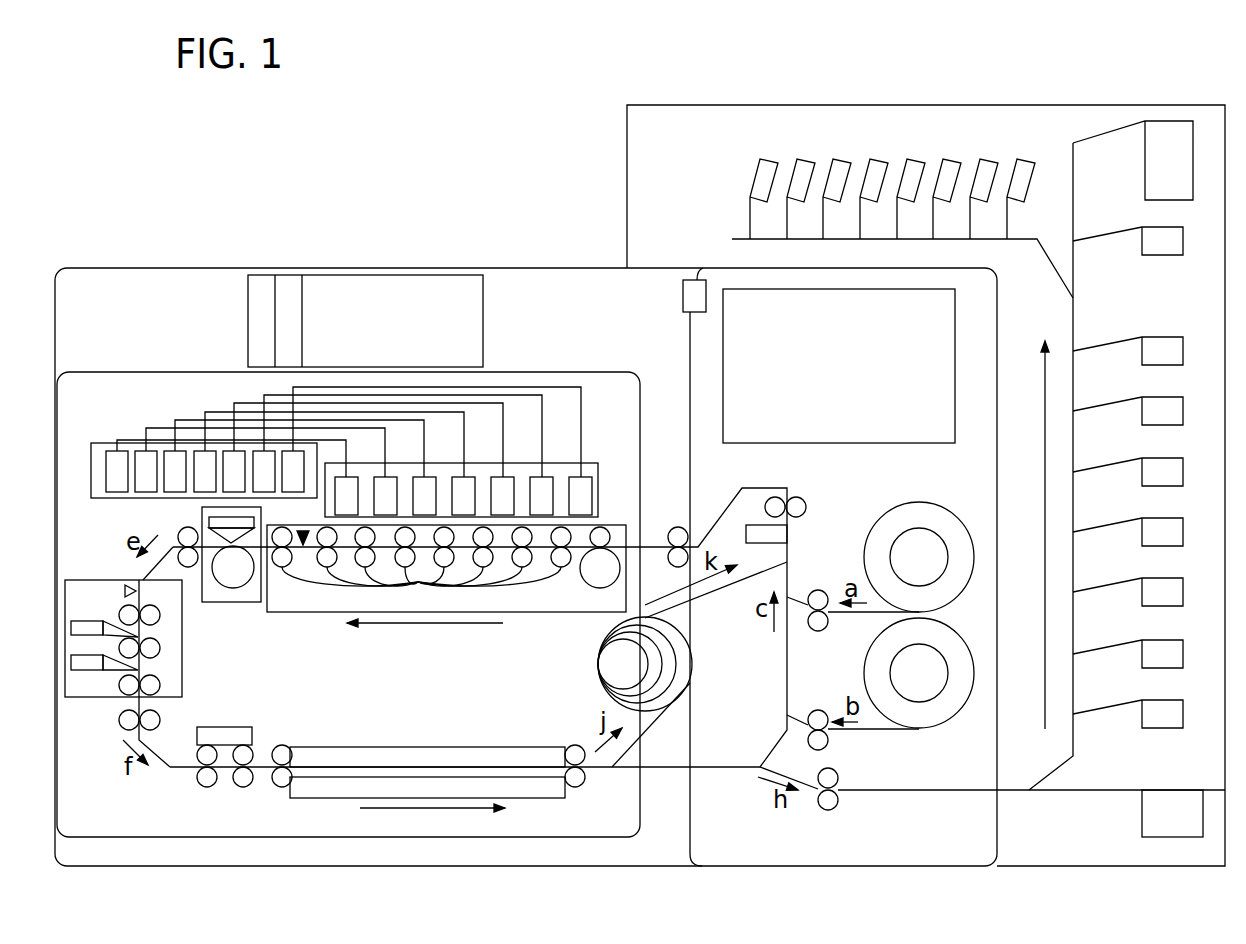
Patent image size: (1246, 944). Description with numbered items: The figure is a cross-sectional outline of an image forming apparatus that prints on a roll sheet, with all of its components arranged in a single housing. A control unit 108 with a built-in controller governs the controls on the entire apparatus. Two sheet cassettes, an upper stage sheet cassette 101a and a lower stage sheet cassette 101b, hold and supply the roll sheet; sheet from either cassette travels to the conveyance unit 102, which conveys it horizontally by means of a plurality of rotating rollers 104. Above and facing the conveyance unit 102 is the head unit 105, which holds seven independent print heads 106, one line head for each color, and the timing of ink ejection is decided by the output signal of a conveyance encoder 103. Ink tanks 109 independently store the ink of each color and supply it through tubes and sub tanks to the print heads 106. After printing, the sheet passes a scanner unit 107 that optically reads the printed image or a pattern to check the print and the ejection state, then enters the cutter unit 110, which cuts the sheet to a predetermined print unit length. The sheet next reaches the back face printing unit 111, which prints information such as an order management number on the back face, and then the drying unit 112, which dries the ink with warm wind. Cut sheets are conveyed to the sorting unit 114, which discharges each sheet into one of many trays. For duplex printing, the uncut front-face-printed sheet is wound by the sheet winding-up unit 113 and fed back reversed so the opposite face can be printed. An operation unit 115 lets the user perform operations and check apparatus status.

The upper stage sheet cassette 101a is at (872, 567).
The lower stage sheet cassette 101b is at (872, 682).
The conveyance unit 102 is at (305, 612).
The conveyance encoder 103 is at (598, 576).
The rotating rollers 104 is at (421, 590).
The head unit 105 is at (600, 470).
The print heads 106 is at (349, 490).
The scanner unit 107 is at (233, 602).
The control unit 108 is at (248, 320).
The ink tanks 109 is at (289, 458).
The cutter unit 110 is at (182, 660).
The back face printing unit 111 is at (252, 736).
The drying unit 112 is at (380, 747).
The sheet winding-up unit 113 is at (598, 672).
The sorting unit 114 is at (627, 178).
The operation unit 115 is at (883, 443).